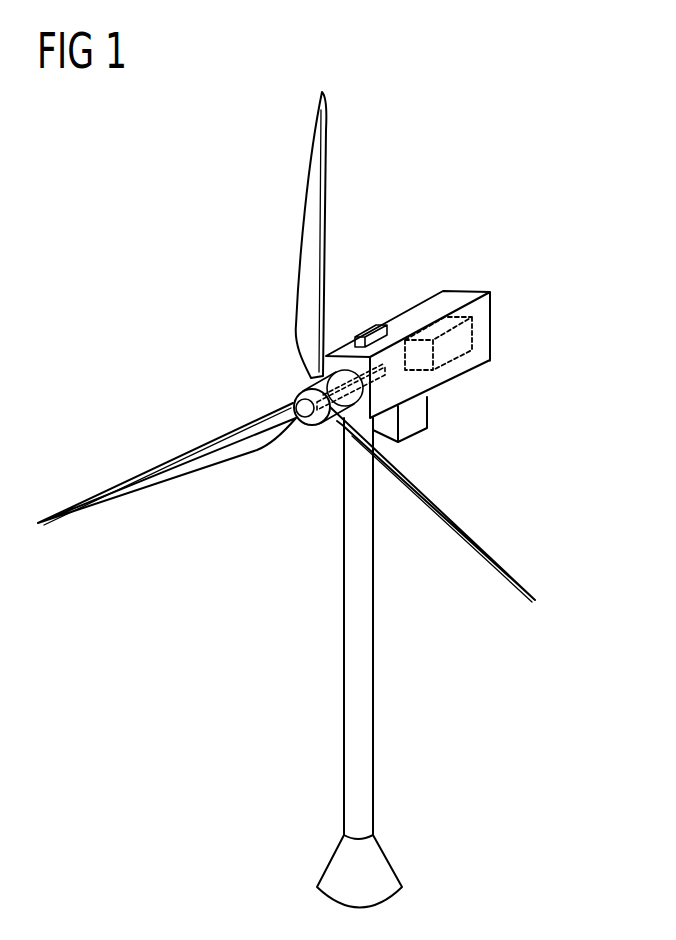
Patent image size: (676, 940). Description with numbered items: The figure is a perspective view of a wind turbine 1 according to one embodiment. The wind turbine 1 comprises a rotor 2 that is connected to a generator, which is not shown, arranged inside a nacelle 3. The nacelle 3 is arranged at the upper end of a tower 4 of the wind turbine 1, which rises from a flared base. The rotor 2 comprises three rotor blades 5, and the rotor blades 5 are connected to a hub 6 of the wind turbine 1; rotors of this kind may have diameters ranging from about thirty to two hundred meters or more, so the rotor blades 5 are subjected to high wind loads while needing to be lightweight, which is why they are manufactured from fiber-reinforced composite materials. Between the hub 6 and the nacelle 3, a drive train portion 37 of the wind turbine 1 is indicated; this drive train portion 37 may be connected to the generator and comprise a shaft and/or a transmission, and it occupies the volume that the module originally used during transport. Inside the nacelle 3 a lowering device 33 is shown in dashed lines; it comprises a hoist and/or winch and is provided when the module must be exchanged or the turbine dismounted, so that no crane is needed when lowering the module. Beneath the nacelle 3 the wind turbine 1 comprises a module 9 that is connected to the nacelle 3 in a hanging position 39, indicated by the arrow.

The wind turbine 1 is at (158, 276).
The rotor 2 is at (148, 455).
The nacelle 3 is at (482, 360).
The tower 4 is at (362, 742).
The rotor blade 5 is at (315, 207).
The hub 6 is at (358, 421).
The module 9 is at (412, 418).
The lowering device 33 is at (468, 332).
The drive train portion 37 is at (322, 367).
The hanging position 39 is at (482, 408).